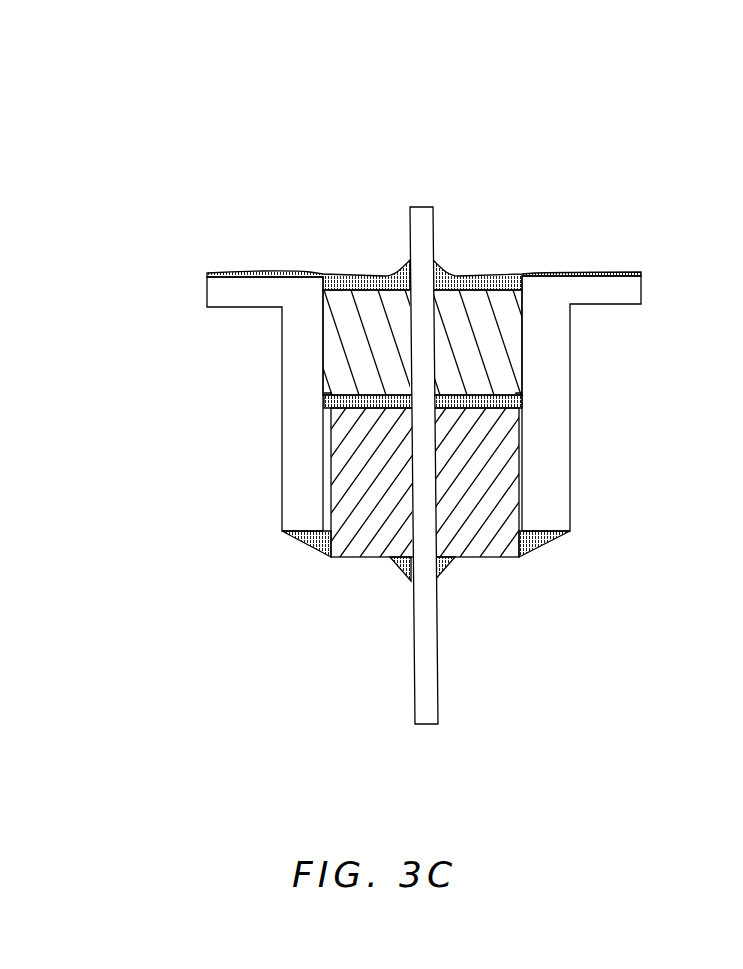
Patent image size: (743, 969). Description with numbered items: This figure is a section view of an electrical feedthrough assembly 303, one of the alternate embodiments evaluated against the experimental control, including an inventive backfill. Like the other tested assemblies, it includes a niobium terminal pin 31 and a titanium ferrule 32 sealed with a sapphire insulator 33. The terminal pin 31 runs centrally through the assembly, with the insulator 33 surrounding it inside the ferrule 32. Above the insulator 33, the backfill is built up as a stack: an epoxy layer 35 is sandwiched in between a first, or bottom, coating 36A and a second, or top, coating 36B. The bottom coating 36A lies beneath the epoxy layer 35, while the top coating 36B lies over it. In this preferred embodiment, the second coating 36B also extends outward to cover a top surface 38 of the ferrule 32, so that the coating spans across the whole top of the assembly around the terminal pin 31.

The feedthrough assembly 303 is at (541, 72).
The terminal pin 31 is at (421, 208).
The ferrule 32 is at (232, 293).
The insulator 33 is at (495, 472).
The epoxy layer 35 is at (477, 318).
The first coating 36A is at (345, 395).
The second coating 36B is at (302, 273).
The top surface 38 is at (600, 283).